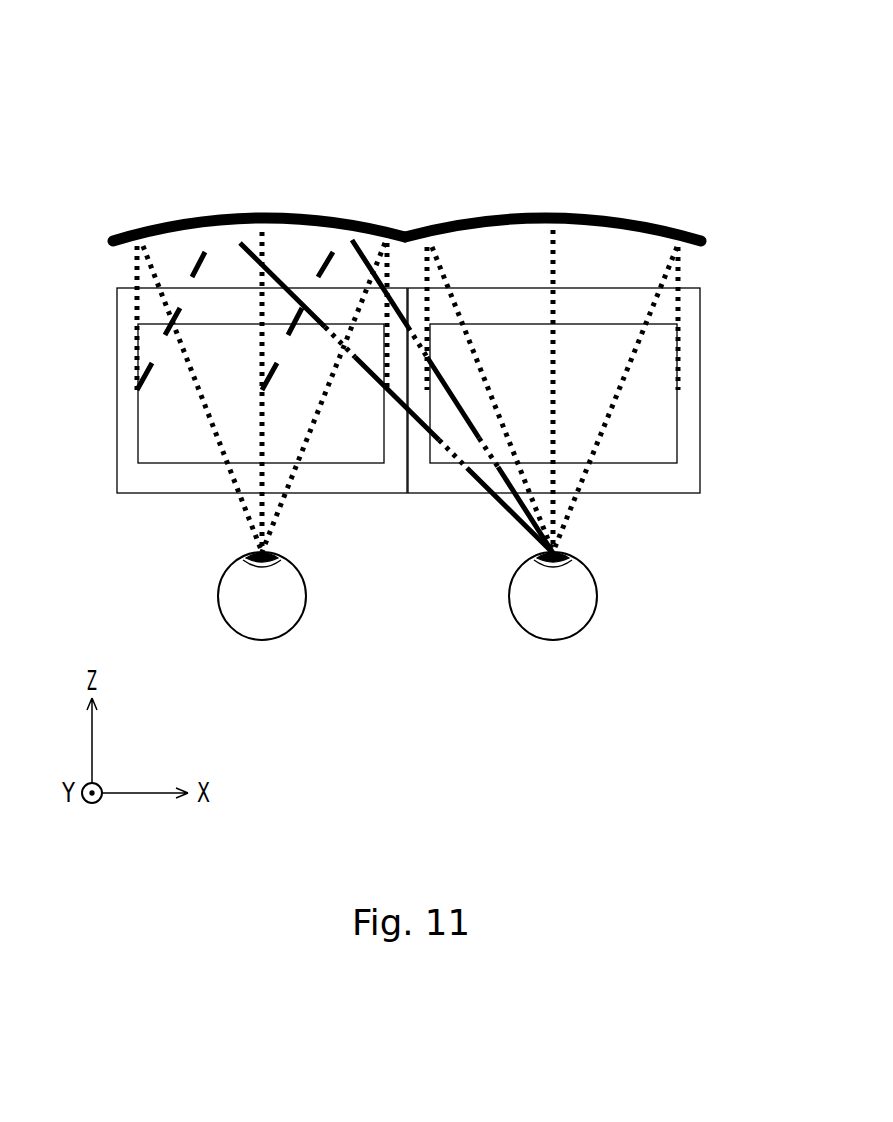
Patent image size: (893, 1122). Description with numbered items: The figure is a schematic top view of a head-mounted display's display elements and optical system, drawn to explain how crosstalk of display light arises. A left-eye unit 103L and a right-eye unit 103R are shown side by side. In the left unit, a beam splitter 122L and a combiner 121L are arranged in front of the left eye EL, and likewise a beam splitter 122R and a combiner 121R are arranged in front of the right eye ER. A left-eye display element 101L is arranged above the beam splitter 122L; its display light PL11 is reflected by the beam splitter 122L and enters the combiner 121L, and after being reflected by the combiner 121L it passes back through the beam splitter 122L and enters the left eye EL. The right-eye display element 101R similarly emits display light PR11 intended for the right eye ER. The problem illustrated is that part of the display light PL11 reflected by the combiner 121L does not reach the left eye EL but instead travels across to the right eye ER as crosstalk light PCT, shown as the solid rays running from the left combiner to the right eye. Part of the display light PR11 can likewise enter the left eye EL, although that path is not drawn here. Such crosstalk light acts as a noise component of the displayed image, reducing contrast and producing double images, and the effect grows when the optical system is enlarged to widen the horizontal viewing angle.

The left display unit 103L is at (180, 115).
The right display unit 103R is at (598, 115).
The combiner 121L is at (322, 217).
The combiner 121R is at (620, 217).
The beam splitter 122L is at (126, 393).
The beam splitter 122R is at (694, 393).
The left-eye display element 101L is at (152, 447).
The right-eye display element 101R is at (667, 447).
The display light PL11 is at (133, 273).
The display light PR11 is at (684, 272).
The crosstalk light PCT is at (503, 503).
The left eye EL is at (300, 623).
The right eye ER is at (590, 626).